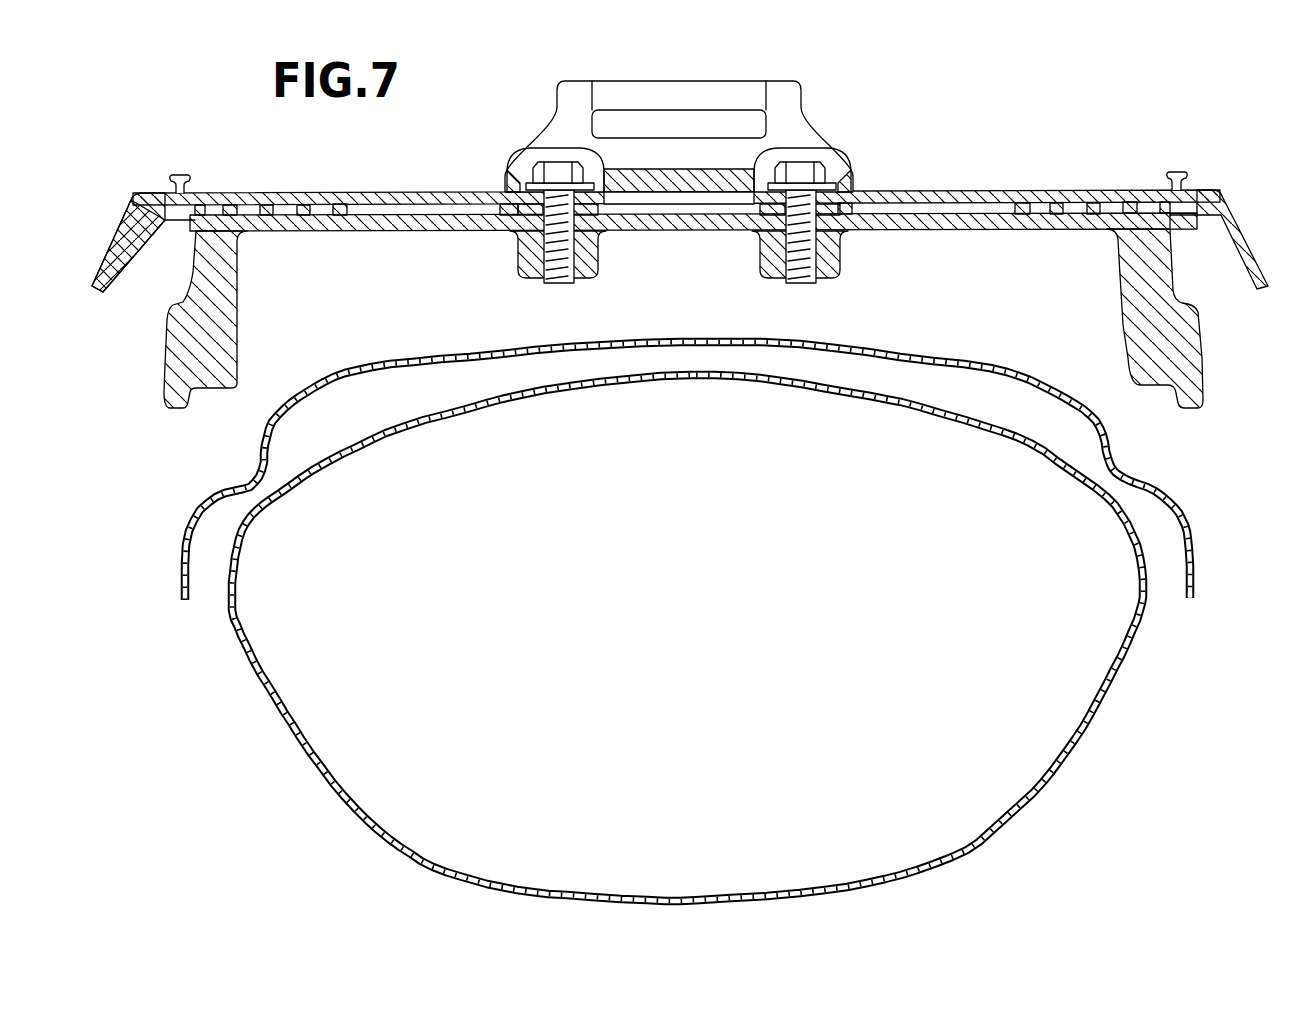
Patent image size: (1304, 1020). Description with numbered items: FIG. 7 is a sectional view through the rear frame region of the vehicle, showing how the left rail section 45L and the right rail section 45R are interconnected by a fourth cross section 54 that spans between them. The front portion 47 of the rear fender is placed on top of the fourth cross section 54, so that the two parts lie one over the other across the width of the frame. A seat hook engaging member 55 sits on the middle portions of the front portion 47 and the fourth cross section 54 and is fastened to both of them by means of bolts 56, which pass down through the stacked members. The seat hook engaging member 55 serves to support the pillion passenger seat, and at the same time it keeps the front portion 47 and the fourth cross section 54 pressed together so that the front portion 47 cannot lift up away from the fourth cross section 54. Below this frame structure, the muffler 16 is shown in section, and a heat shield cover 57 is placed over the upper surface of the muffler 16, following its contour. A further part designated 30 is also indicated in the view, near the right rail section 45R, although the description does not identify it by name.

The muffler 16 is at (1037, 795).
The lamp housing assembly 30 is at (126, 395).
The right rail section 45R is at (177, 412).
The left rail section 45L is at (1193, 410).
The front portion of the rear fender 47 is at (921, 190).
The fourth cross section 54 is at (936, 233).
The seat hook engaging member 55 is at (689, 80).
The bolts 56 is at (557, 285).
The heat shield cover 57 is at (417, 358).